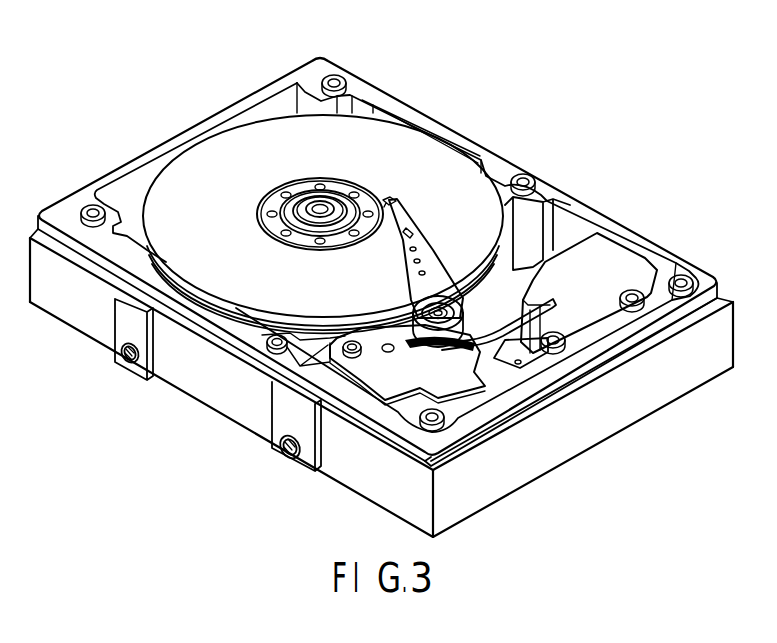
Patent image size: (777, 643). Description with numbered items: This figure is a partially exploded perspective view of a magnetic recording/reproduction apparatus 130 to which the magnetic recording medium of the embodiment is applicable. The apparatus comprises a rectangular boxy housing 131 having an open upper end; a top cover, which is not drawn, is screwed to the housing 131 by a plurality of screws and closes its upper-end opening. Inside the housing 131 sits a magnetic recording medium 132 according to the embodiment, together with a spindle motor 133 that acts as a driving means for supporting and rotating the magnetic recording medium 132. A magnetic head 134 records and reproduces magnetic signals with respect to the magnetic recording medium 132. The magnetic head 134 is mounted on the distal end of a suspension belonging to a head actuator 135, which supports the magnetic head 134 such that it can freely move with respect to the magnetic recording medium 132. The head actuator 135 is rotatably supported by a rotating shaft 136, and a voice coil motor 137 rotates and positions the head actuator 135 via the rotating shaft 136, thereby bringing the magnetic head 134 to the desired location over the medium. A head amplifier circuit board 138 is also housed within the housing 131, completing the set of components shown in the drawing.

The magnetic recording/reproduction apparatus 130 is at (523, 68).
The housing 131 is at (662, 384).
The magnetic recording medium 132 is at (404, 137).
The spindle motor 133 is at (257, 212).
The magnetic head 134 is at (397, 203).
The head actuator 135 is at (428, 247).
The rotating shaft 136 is at (417, 312).
The voice coil motor 137 is at (470, 347).
The head amplifier circuit board 138 is at (610, 267).